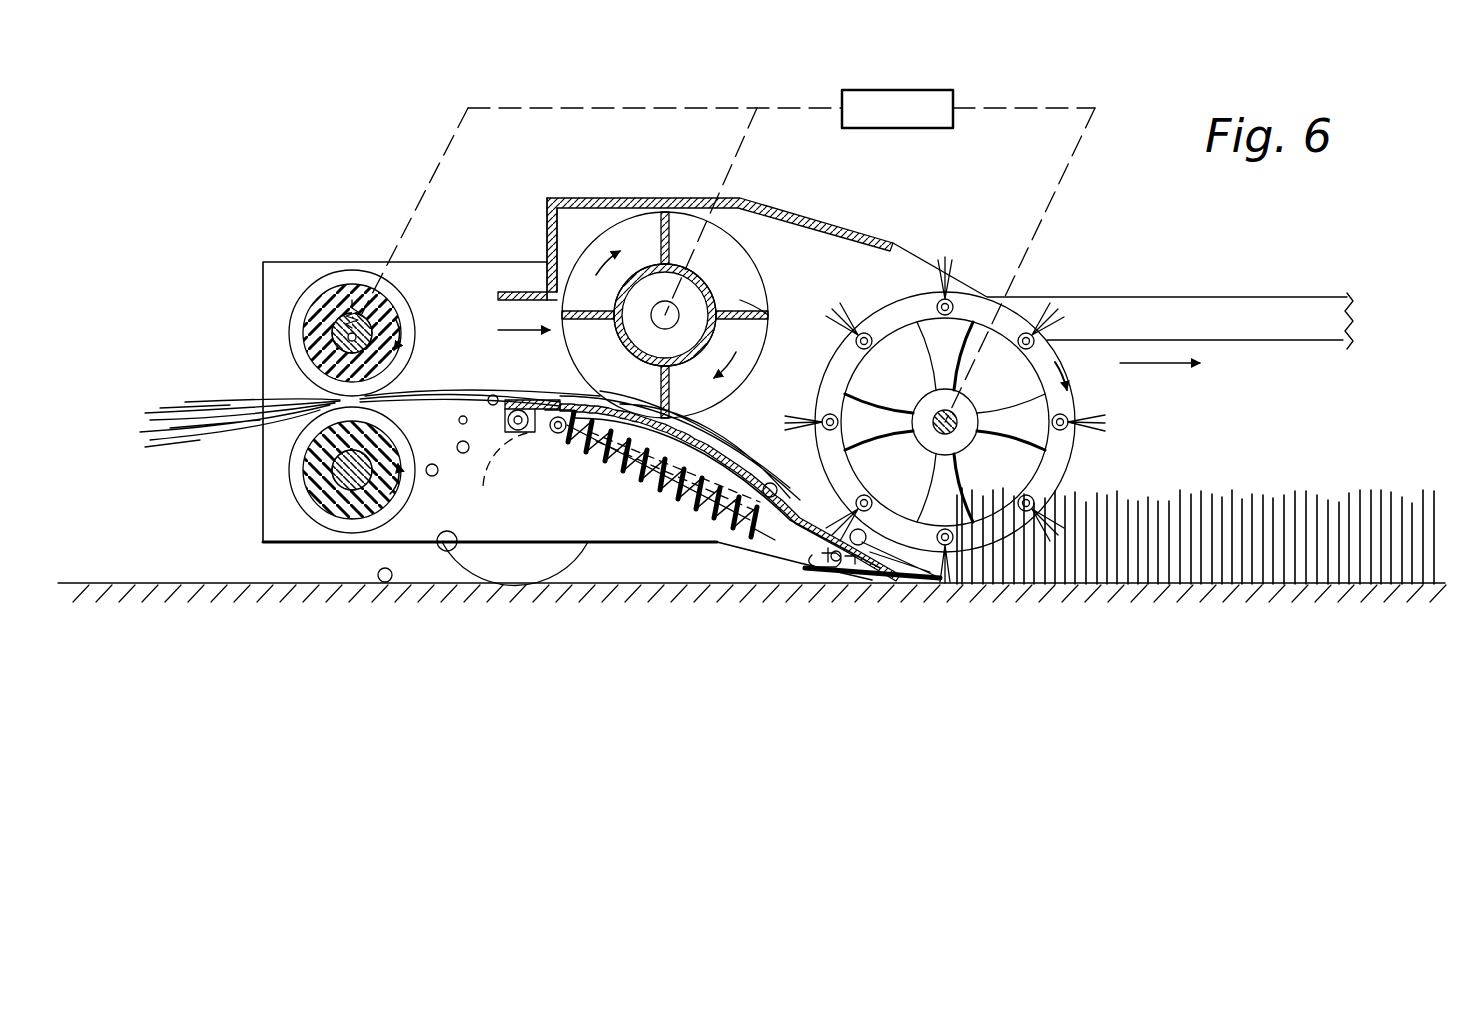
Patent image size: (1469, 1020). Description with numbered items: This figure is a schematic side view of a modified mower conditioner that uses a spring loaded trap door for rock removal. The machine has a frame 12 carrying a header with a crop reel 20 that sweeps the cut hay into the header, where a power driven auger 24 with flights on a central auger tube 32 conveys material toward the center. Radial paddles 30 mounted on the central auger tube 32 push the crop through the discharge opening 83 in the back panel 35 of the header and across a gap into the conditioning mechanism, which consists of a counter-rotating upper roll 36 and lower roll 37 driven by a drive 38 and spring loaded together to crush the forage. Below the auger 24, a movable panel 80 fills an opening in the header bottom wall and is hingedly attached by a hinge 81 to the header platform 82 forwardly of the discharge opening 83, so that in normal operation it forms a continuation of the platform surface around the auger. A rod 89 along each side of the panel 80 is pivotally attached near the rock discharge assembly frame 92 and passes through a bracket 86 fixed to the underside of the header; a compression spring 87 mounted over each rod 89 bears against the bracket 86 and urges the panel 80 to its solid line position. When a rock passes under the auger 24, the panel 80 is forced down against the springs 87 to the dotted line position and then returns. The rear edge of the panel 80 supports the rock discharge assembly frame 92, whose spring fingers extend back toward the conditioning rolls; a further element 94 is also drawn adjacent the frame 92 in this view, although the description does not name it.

The frame 12 is at (314, 516).
The crop reel 20 is at (1075, 392).
The auger 24 is at (722, 266).
The radial paddles 30 is at (741, 306).
The central auger tube 32 is at (637, 348).
The back panel 35 is at (558, 233).
The upper roll 36 is at (320, 318).
The lower roll 37 is at (318, 480).
The drive 38 is at (888, 90).
The panel 80 is at (726, 662).
The hinge 81 is at (832, 560).
The header platform 82 is at (878, 568).
The discharge opening 83 is at (506, 330).
The brackets 86 is at (728, 500).
The compression spring 87 is at (653, 493).
The rod 89 is at (600, 457).
The rock discharge assembly frame 92 is at (524, 398).
The roller 94 is at (548, 440).